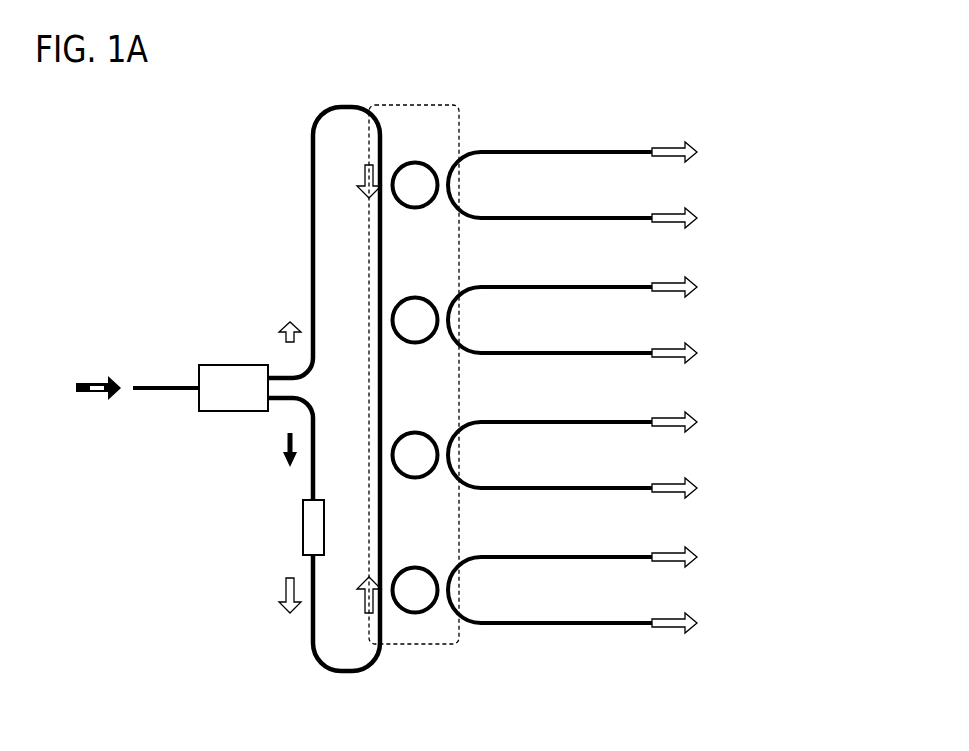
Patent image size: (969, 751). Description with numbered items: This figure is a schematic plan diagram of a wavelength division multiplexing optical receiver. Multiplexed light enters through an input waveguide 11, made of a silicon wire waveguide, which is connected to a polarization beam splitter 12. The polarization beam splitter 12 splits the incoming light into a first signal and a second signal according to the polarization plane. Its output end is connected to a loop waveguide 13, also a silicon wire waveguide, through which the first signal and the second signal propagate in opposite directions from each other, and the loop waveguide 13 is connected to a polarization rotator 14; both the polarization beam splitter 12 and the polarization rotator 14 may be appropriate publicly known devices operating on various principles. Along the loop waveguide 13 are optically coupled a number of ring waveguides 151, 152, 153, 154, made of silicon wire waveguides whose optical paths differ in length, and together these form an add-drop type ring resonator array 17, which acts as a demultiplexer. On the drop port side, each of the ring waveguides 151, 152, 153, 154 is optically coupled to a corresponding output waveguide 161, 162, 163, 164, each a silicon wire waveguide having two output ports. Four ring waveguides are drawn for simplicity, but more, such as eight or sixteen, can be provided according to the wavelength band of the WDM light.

The input waveguide 11 is at (166, 387).
The polarization beam splitter 12 is at (230, 365).
The loop waveguide 13 is at (313, 224).
The polarization rotator 14 is at (303, 530).
The ring waveguide 151 is at (415, 162).
The ring waveguide 152 is at (415, 297).
The ring waveguide 153 is at (415, 432).
The ring waveguide 154 is at (415, 567).
The output waveguide 161 is at (568, 151).
The output waveguide 162 is at (569, 286).
The output waveguide 163 is at (569, 421).
The output waveguide 164 is at (569, 556).
The add-drop type ring resonator array 17 is at (410, 646).